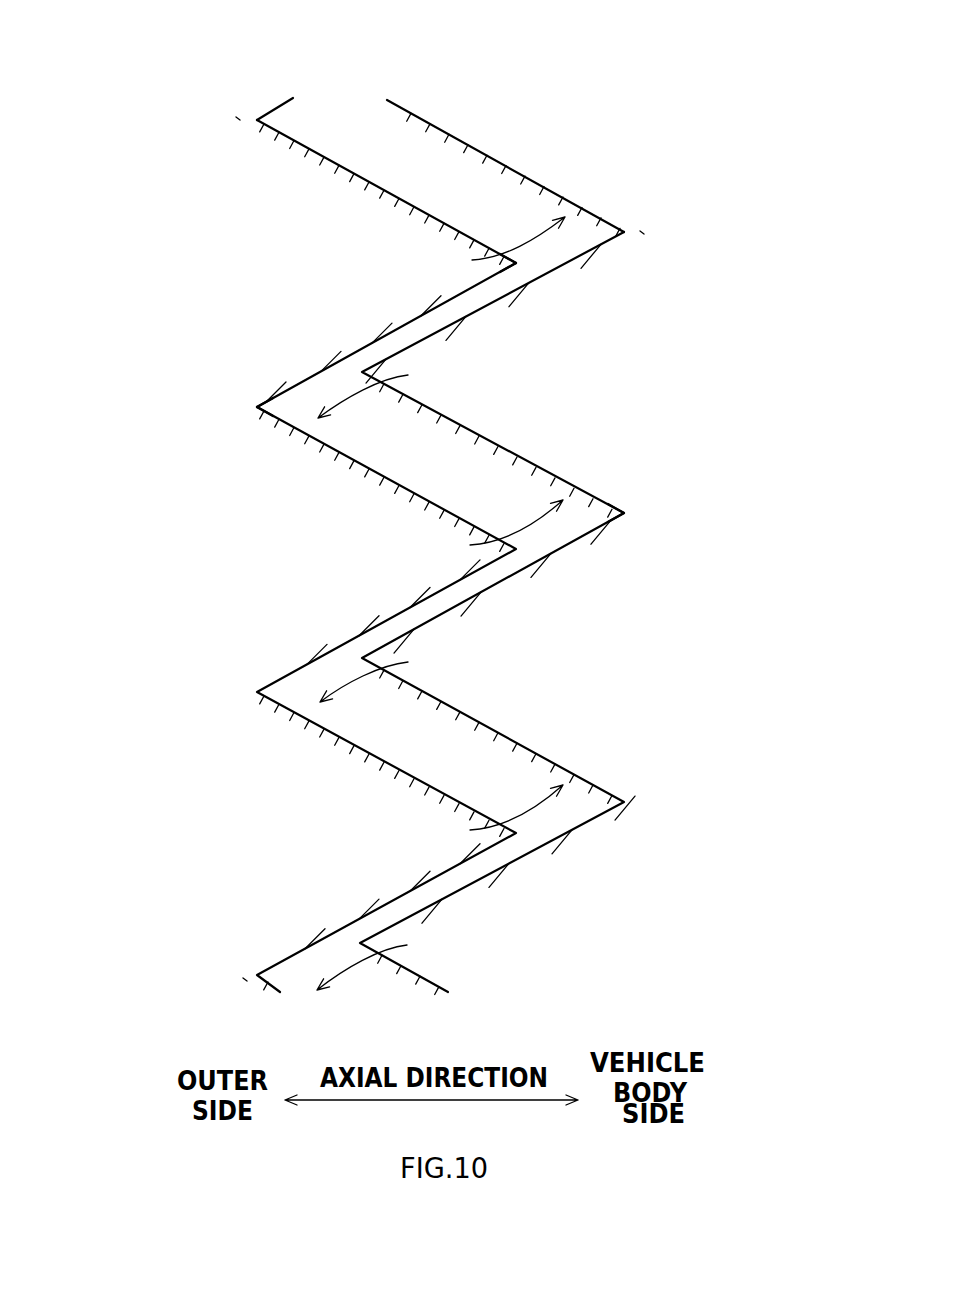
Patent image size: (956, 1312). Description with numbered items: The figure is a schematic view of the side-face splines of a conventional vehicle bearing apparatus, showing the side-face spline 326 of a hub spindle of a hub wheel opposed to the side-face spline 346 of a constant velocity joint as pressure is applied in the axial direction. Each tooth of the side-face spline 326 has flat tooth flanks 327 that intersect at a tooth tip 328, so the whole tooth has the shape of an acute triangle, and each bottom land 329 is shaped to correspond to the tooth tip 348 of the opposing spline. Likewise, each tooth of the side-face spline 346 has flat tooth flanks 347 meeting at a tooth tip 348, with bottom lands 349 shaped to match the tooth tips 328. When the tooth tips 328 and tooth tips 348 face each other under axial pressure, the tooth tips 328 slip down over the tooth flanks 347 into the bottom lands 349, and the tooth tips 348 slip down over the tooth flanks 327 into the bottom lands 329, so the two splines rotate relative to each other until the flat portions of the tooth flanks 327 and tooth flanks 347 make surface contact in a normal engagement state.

The side-face spline 326 is at (130, 638).
The tooth flank 327 is at (347, 163).
The tooth tip 328 is at (520, 263).
The bottom land 329 is at (260, 407).
The side-face spline 346 is at (772, 640).
The tooth flank 347 is at (513, 167).
The tooth tip 348 is at (340, 368).
The bottom land 349 is at (622, 514).